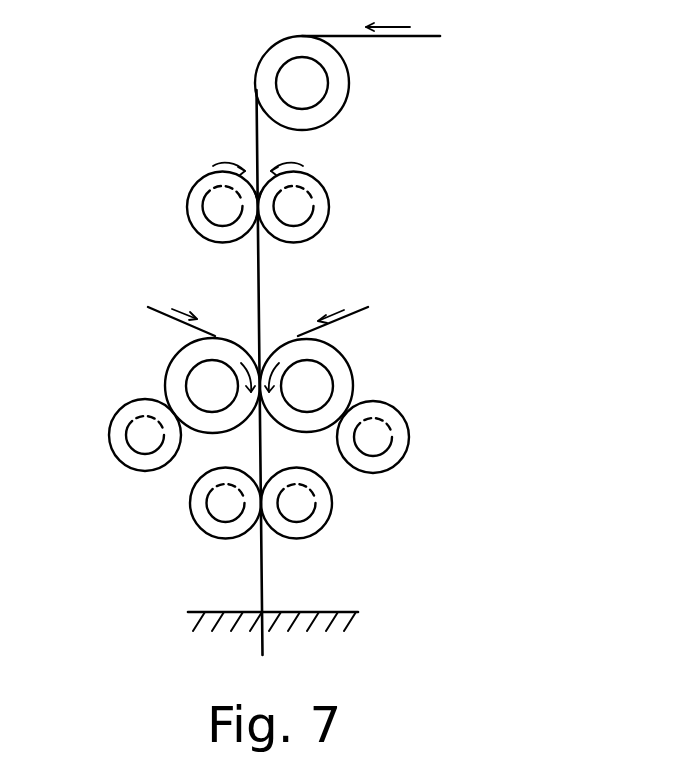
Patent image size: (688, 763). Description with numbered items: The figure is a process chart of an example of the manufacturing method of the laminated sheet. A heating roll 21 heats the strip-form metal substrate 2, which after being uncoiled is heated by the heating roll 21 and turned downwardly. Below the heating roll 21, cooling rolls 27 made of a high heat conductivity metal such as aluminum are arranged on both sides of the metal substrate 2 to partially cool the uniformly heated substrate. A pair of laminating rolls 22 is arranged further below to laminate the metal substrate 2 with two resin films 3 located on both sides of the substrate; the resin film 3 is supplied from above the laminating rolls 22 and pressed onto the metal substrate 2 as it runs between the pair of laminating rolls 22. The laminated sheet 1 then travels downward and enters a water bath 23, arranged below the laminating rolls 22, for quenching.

The film / web 1 is at (264, 563).
The metal substrate 2 is at (421, 36).
The resin film 3 is at (151, 316).
The heating roll 21 is at (338, 99).
The laminating rolls 22 is at (177, 371).
The water bath 23 is at (291, 641).
The cooling rolls 27 is at (190, 207).